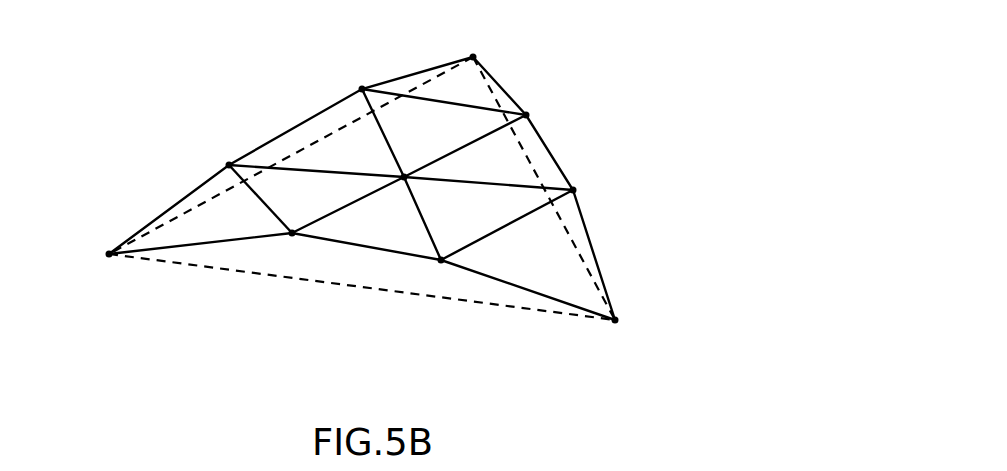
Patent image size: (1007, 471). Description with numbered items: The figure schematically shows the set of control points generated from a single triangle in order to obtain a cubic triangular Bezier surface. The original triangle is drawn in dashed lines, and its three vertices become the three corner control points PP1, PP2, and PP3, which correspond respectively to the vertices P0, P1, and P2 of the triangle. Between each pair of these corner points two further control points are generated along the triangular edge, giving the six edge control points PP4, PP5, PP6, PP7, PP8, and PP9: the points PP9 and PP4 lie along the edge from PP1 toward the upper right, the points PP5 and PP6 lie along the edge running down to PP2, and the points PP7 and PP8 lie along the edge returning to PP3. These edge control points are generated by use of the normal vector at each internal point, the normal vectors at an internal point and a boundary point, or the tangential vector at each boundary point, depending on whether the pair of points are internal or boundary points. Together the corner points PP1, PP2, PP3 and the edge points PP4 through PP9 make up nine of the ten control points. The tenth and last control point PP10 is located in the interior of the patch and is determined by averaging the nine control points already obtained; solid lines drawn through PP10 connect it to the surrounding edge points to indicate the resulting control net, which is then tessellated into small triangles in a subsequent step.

The control point PP1 is at (473, 57).
The control point PP2 is at (615, 320).
The control point PP3 is at (109, 254).
The control point PP4 is at (553, 112).
The control point PP5 is at (602, 191).
The control point PP6 is at (441, 260).
The control point PP7 is at (292, 233).
The control point PP8 is at (205, 155).
The control point PP9 is at (347, 77).
The control point PP10 is at (404, 177).